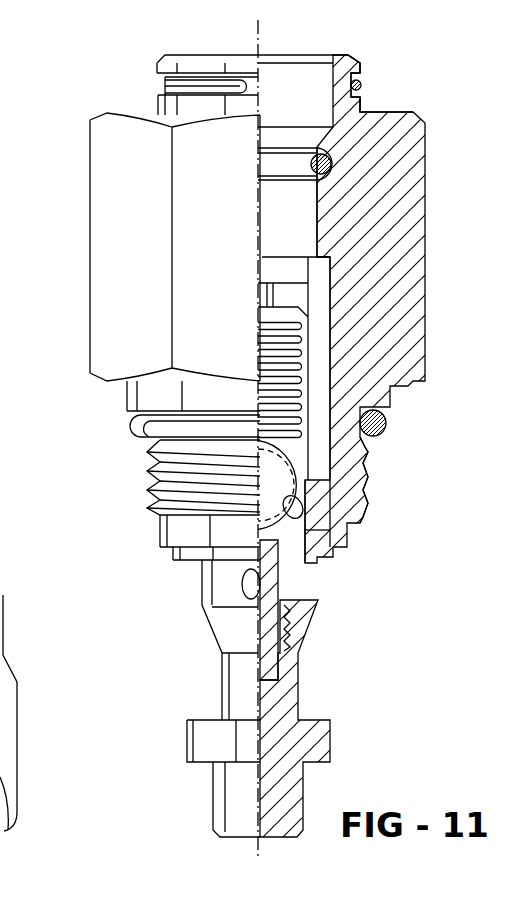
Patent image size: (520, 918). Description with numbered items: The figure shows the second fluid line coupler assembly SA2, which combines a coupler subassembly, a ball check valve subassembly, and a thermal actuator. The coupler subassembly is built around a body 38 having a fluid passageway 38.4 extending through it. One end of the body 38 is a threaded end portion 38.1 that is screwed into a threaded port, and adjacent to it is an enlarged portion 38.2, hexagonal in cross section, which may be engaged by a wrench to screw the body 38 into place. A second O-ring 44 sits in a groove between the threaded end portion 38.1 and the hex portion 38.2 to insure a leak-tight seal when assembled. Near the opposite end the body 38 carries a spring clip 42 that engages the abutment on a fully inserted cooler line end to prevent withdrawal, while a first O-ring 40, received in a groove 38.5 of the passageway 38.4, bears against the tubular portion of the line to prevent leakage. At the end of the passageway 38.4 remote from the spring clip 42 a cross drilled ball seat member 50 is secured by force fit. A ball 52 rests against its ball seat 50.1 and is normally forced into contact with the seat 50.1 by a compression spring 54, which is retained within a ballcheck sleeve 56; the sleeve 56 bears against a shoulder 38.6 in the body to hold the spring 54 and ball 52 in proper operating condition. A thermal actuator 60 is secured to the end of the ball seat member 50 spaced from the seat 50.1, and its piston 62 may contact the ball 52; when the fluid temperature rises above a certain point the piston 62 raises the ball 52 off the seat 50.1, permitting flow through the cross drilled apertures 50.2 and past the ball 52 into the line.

The body 38 is at (132, 247).
The threaded end portion 38.1 is at (160, 78).
The enlarged portion 38.2 is at (161, 276).
The passageway 38.4 is at (312, 210).
The groove 38.5 is at (368, 150).
The shoulder 38.6 is at (325, 273).
The first O-ring 40 is at (332, 176).
The spring clip 42 is at (362, 84).
The second O-ring 44 is at (386, 419).
The ball seat member 50 is at (192, 593).
The ball seat 50.1 is at (313, 530).
The cross drilled apertures 50.2 is at (318, 600).
The ball 52 is at (310, 452).
The compression spring 54 is at (300, 353).
The ballcheck sleeve 56 is at (288, 265).
The thermal actuator 60 is at (300, 692).
The piston 62 is at (299, 663).
The second fluid line coupler assembly SA2 is at (102, 433).